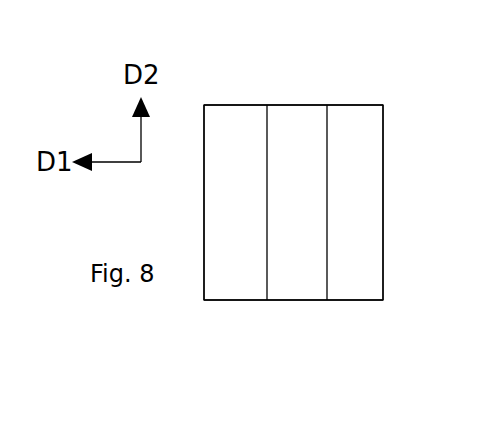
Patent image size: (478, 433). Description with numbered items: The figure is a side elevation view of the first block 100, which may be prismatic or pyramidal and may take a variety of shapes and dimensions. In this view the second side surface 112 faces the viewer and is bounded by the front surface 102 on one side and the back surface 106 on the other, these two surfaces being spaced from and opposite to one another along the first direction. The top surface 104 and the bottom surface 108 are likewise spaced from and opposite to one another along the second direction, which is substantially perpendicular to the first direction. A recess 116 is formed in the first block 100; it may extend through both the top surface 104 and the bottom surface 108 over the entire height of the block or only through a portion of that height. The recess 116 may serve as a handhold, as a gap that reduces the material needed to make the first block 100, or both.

The first block 100 is at (247, 307).
The front surface 102 is at (204, 208).
The top surface 104 is at (223, 108).
The back surface 106 is at (383, 186).
The bottom surface 108 is at (268, 300).
The second side surface 112 is at (350, 282).
The recess 116 is at (297, 135).